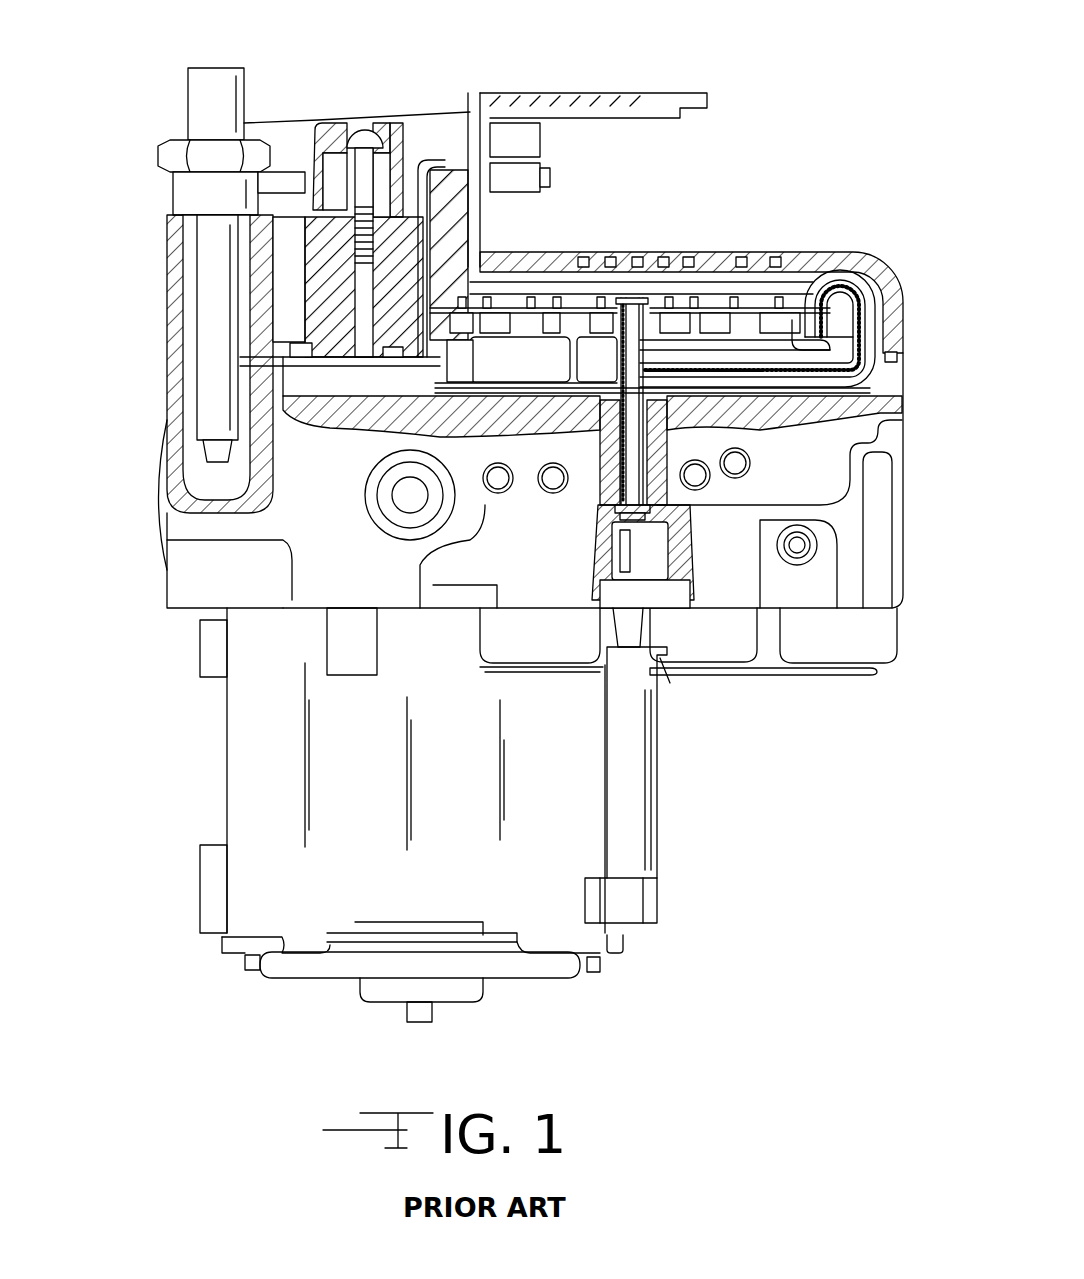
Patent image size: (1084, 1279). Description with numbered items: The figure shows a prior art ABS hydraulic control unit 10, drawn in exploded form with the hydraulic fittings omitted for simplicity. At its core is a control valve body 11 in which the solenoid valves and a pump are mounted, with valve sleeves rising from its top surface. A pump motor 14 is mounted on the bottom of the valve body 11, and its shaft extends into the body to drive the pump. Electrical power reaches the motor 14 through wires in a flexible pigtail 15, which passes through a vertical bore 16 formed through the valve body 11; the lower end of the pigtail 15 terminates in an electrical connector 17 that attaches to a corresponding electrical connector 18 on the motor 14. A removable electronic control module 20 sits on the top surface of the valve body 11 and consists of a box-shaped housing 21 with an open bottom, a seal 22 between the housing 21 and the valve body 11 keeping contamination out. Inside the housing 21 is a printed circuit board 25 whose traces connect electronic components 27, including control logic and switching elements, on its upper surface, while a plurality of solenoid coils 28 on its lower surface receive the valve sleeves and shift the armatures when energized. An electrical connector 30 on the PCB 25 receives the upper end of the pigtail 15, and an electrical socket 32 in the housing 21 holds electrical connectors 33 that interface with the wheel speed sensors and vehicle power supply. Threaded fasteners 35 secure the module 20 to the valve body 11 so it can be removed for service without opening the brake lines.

The ABS hydraulic control unit 10 is at (748, 88).
The control valve body 11 is at (868, 587).
The pump motor 14 is at (525, 915).
The flexible pigtail 15 is at (850, 292).
The vertical bore 16 is at (652, 442).
The electrical connector 17 is at (648, 508).
The electrical connector 18 is at (648, 565).
The electronic control module 20 is at (148, 212).
The box-shaped housing 21 is at (888, 283).
The seal 22 is at (898, 358).
The printed circuit board 25 is at (880, 330).
The electronic components 27 is at (530, 298).
The solenoid coils 28 is at (597, 362).
The electrical connector 30 is at (765, 290).
The electrical socket 32 is at (545, 137).
The electrical connectors 33 is at (556, 173).
The threaded fasteners 35 is at (155, 97).